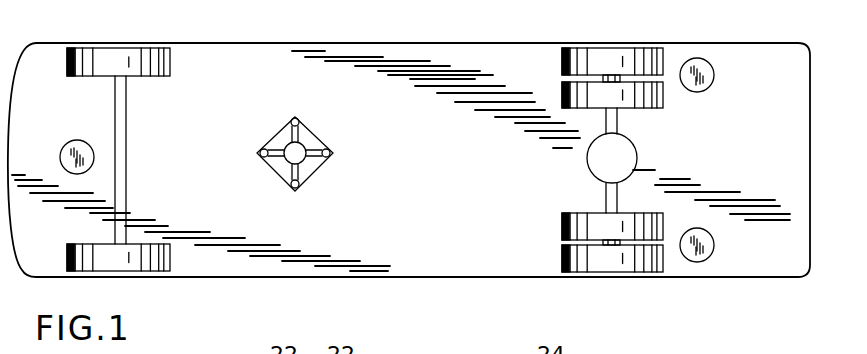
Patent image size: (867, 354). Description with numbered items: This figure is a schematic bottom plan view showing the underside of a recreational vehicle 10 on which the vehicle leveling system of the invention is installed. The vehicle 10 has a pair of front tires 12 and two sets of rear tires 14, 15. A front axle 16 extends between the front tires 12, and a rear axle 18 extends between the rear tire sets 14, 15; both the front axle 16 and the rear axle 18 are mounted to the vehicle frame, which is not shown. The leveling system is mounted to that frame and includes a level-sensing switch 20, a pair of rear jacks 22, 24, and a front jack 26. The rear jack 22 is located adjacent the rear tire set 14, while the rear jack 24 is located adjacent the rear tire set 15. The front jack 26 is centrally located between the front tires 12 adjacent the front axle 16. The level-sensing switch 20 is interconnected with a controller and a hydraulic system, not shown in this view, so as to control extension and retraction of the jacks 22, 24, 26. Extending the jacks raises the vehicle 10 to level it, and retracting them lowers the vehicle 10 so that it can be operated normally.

The recreational vehicle 10 is at (502, 40).
The front tires 12 is at (147, 50).
The rear tire set 14 is at (548, 96).
The rear tire set 15 is at (550, 247).
The front axle 16 is at (127, 150).
The rear axle 18 is at (617, 125).
The level-sensing switch 20 is at (331, 150).
The rear jack 22 is at (716, 62).
The rear jack 24 is at (709, 263).
The front jack 26 is at (77, 134).